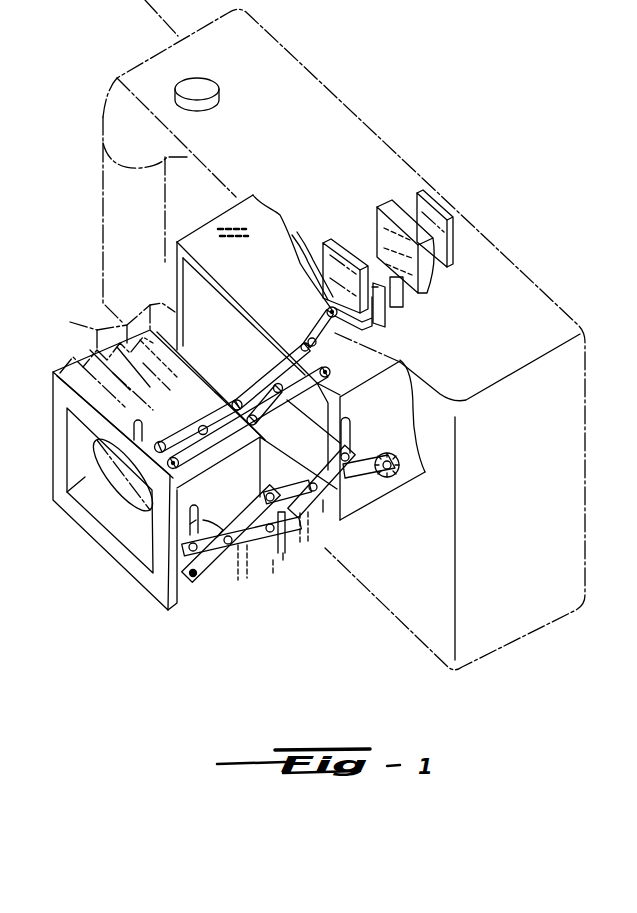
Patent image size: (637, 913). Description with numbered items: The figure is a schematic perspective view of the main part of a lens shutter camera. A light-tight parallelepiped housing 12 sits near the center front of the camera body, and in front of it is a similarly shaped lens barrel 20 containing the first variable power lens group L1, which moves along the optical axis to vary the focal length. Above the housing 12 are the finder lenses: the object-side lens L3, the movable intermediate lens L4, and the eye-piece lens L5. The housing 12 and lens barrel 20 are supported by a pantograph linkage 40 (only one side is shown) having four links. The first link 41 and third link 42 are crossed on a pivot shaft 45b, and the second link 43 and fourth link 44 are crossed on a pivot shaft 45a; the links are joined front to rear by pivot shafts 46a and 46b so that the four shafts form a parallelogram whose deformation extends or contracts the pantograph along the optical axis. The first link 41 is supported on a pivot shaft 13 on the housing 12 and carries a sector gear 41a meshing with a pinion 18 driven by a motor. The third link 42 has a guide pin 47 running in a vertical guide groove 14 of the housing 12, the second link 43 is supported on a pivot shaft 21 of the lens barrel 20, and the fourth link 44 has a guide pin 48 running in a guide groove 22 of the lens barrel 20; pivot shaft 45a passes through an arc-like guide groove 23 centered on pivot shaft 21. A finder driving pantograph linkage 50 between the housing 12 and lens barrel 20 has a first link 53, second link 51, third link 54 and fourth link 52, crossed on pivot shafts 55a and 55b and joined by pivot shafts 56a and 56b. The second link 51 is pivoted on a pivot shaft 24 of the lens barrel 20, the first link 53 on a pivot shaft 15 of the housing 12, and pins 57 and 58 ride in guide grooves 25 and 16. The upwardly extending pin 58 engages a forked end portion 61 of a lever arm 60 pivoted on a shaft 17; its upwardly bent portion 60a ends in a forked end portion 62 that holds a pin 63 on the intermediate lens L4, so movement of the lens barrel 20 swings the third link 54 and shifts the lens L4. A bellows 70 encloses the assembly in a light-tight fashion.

The housing 12 is at (218, 224).
The pivot shaft 13 is at (347, 497).
The guide groove 14 is at (349, 434).
The pivot shaft 15 is at (358, 386).
The guide groove 16 is at (298, 340).
The shaft 17 is at (318, 285).
The pinion 18 is at (394, 472).
The lens barrel 20 is at (103, 537).
The pivot shaft 21 is at (192, 580).
The guide groove 22 is at (193, 521).
The arc-like guide groove 23 is at (213, 525).
The pivot shaft 24 is at (178, 467).
The guide groove 25 is at (140, 424).
The pantograph linkage 40 is at (273, 575).
The first link 41 is at (323, 513).
The sector gear 41a is at (363, 484).
The third link 42 is at (286, 533).
The second link 43 is at (213, 574).
The fourth link 44 is at (256, 555).
The pivot shaft 45a is at (237, 565).
The pivot shaft 45b is at (300, 515).
The pivot shaft 46a is at (265, 496).
The pivot shaft 46b is at (283, 555).
The guide pin 47 is at (350, 455).
The guide pin 48 is at (177, 567).
The pantograph linkage 50 is at (233, 367).
The second link 51 is at (217, 392).
The fourth link 52 is at (233, 428).
The first link 53 is at (257, 462).
The third link 54 is at (274, 392).
The pivot shaft 55a is at (307, 382).
The pivot shaft 55b is at (204, 427).
The pivot shaft 56a is at (240, 400).
The pivot shaft 56b is at (256, 416).
The pin 57 is at (160, 441).
The pin 58 is at (313, 352).
The lever arm 60 is at (353, 315).
The upwardly bent portion 60a is at (372, 288).
The forked end portion 61 is at (316, 326).
The forked end portion 62 is at (407, 292).
The pin 63 is at (397, 318).
The bellows 70 is at (90, 325).
The variable power lens group L1 is at (112, 512).
The lens L3 is at (342, 250).
The intermediate lens L4 is at (388, 205).
The eye-piece lens L5 is at (432, 192).